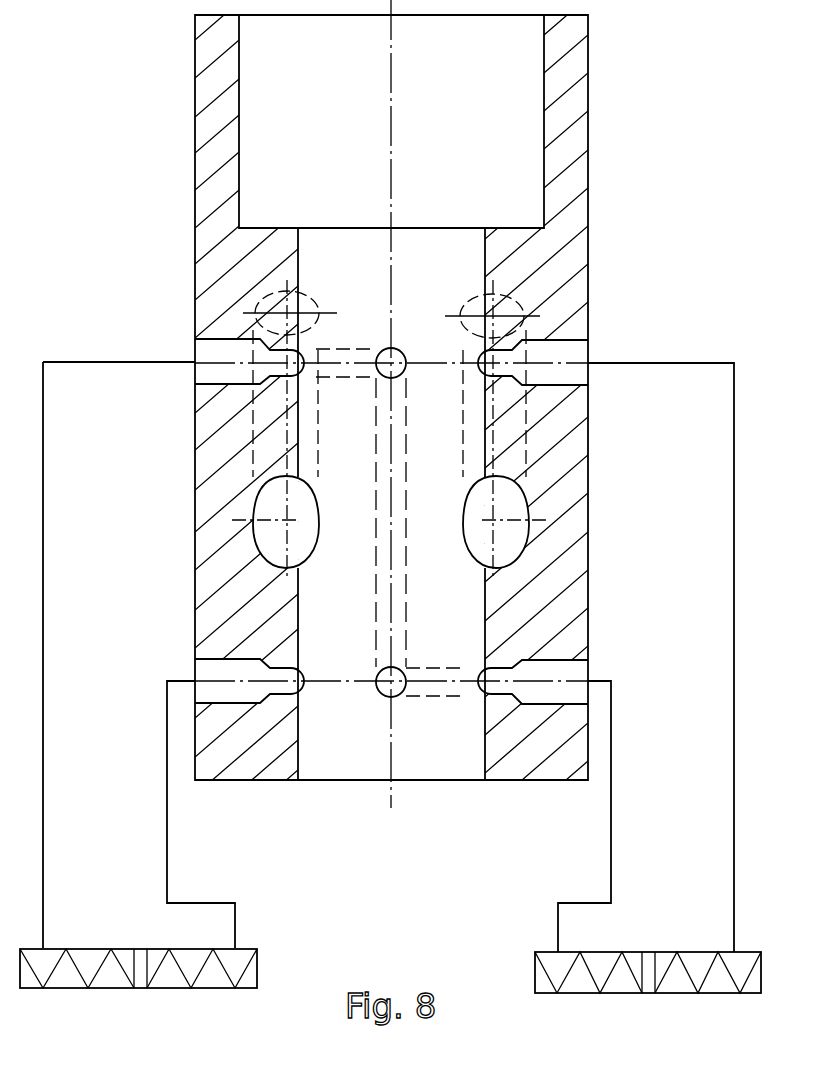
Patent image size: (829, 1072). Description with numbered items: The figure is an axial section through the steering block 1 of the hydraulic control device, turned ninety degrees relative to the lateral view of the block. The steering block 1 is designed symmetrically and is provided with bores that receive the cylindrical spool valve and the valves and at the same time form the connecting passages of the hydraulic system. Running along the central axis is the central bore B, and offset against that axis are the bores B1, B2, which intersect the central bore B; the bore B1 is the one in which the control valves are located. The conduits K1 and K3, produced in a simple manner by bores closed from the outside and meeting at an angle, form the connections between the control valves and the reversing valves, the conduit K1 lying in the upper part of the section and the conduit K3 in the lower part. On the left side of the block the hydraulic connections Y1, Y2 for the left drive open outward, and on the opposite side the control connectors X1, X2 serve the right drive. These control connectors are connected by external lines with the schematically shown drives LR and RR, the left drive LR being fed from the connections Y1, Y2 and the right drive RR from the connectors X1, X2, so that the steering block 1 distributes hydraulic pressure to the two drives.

The steering block 1 is at (200, 282).
The central bore B is at (470, 267).
The conduit K1 is at (376, 352).
The conduit K3 is at (425, 690).
The control connector X1 is at (640, 363).
The control connector X2 is at (611, 701).
The hydraulic connection Y1 is at (170, 360).
The hydraulic connection Y2 is at (167, 708).
The bore B1 is at (252, 424).
The bore B2 is at (527, 448).
The drive LR is at (125, 988).
The drive RR is at (581, 990).